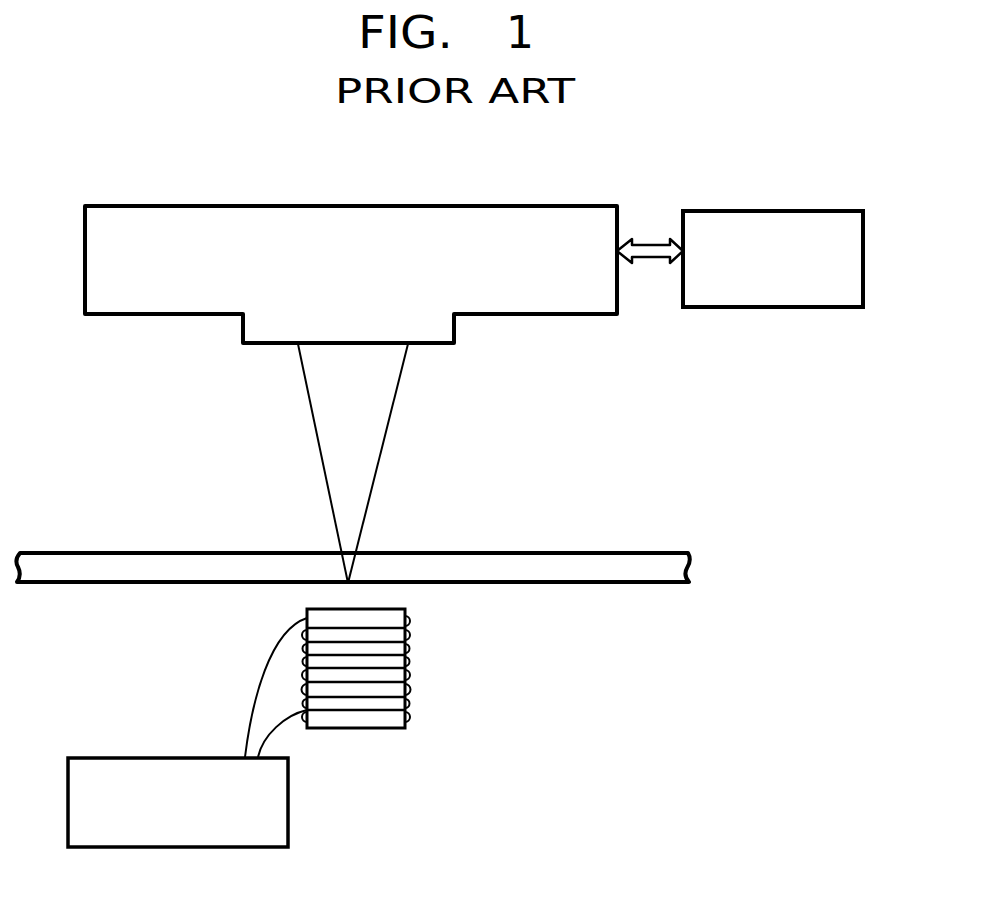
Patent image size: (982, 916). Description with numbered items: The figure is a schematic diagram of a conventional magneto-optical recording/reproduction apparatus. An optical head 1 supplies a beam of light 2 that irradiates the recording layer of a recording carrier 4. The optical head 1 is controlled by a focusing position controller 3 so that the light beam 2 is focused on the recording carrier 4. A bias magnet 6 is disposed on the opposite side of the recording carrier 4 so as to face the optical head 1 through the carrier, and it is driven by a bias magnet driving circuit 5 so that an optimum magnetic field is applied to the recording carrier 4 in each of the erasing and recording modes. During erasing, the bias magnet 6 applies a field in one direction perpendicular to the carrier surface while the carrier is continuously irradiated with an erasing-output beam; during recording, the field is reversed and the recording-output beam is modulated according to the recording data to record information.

The optical head 1 is at (573, 320).
The beam of light 2 is at (365, 433).
The focusing position controller 3 is at (736, 210).
The recording carrier 4 is at (655, 577).
The bias magnet driving circuit 5 is at (288, 822).
The bias magnet 6 is at (393, 647).